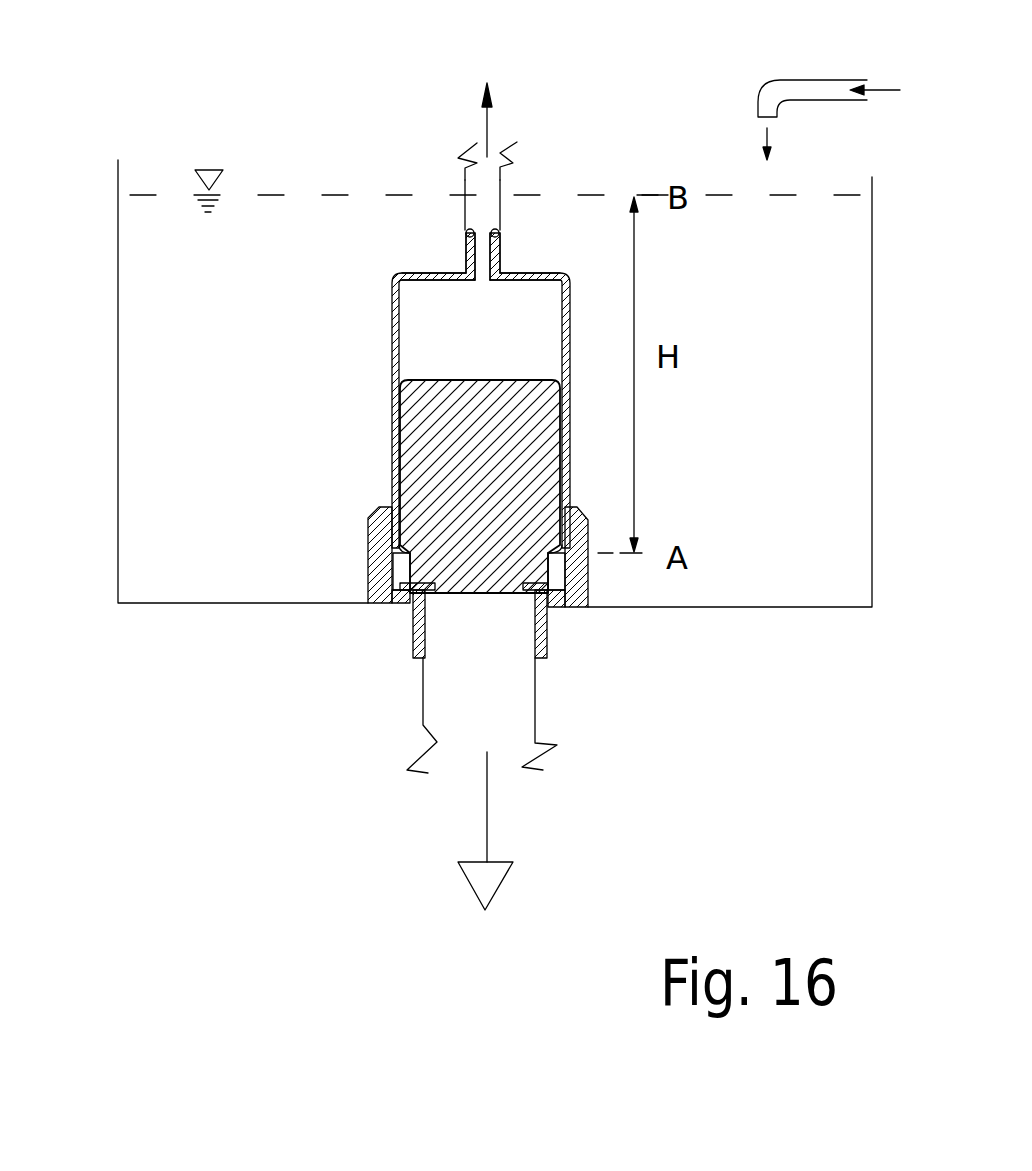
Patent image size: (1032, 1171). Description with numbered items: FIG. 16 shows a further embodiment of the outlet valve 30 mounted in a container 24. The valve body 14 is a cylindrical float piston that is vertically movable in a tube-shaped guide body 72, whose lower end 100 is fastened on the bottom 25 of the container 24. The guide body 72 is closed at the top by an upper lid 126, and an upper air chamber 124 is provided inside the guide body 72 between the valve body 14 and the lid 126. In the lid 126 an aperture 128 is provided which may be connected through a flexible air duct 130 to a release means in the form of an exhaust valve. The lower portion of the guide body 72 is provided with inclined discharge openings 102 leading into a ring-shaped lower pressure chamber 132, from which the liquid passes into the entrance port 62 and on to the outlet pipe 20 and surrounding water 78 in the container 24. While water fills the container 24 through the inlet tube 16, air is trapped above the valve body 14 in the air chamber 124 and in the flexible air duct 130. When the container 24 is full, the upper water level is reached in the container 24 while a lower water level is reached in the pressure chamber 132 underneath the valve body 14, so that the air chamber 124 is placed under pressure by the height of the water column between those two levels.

The valve body 14 is at (427, 435).
The inlet tube 16 is at (803, 88).
The outlet pipe 20 is at (543, 645).
The container 24 is at (118, 300).
The bottom 25 is at (233, 607).
The outlet valve 30 is at (237, 575).
The entrance port 62 is at (435, 600).
The guide body 72 is at (397, 362).
The bath liquid 78 is at (160, 398).
The lower end 100 is at (578, 592).
The discharge openings 102 is at (580, 563).
The upper air chamber 124 is at (410, 322).
The upper lid 126 is at (433, 277).
The aperture 128 is at (497, 250).
The flexible air duct 130 is at (462, 185).
The lower pressure chamber 132 is at (400, 570).